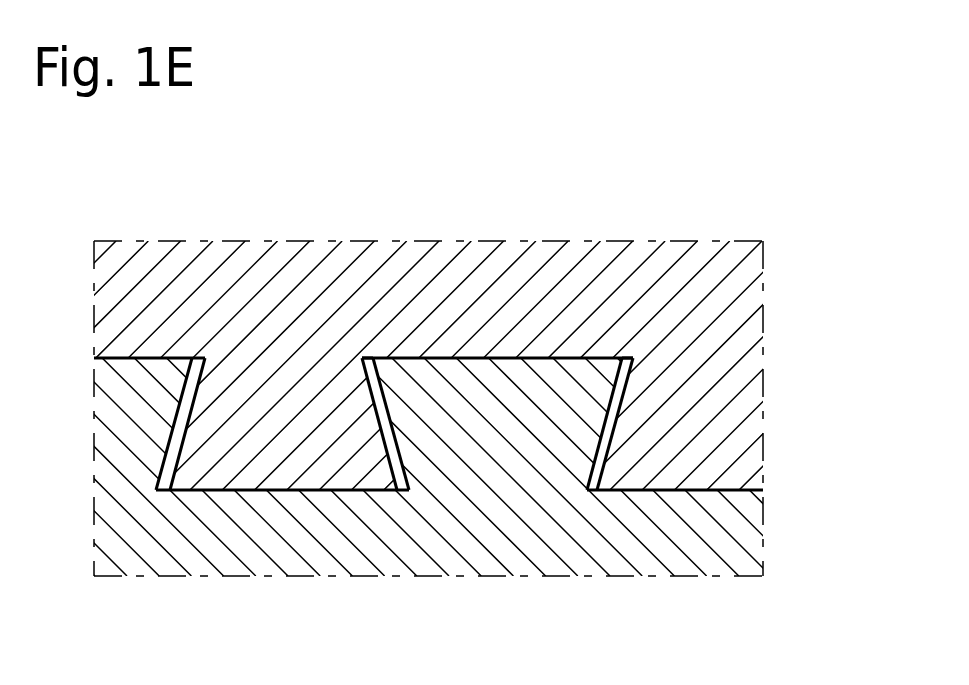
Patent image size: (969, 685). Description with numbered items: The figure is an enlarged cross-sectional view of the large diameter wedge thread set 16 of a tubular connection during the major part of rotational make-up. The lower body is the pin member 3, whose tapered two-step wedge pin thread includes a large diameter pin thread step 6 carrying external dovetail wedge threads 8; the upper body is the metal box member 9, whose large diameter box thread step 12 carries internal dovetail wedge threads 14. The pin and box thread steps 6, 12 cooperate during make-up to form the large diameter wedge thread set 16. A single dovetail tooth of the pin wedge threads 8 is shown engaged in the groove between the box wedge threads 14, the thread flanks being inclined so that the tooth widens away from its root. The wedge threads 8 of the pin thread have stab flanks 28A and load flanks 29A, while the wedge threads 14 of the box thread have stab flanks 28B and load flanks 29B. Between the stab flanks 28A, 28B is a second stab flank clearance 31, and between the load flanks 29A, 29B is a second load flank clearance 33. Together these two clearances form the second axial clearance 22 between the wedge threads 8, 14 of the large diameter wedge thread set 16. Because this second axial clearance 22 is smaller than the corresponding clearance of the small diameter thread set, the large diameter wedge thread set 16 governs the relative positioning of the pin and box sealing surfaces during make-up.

The pin member 3 is at (358, 582).
The large diameter pin thread step 6 is at (513, 352).
The external dovetail wedge threads 8 is at (488, 400).
The box member 9 is at (199, 240).
The large diameter box thread step 12 is at (312, 497).
The internal dovetail wedge threads 14 is at (226, 460).
The large diameter wedge thread set 16 is at (417, 515).
The second axial clearance 22 is at (468, 522).
The stab flank of pin wedge thread 28A is at (373, 410).
The stab flank of box wedge thread 28B is at (400, 440).
The load flank of pin wedge thread 29A is at (614, 431).
The load flank of box wedge thread 29B is at (610, 393).
The second stab flank clearance 31 is at (369, 356).
The second load flank clearance 33 is at (631, 355).